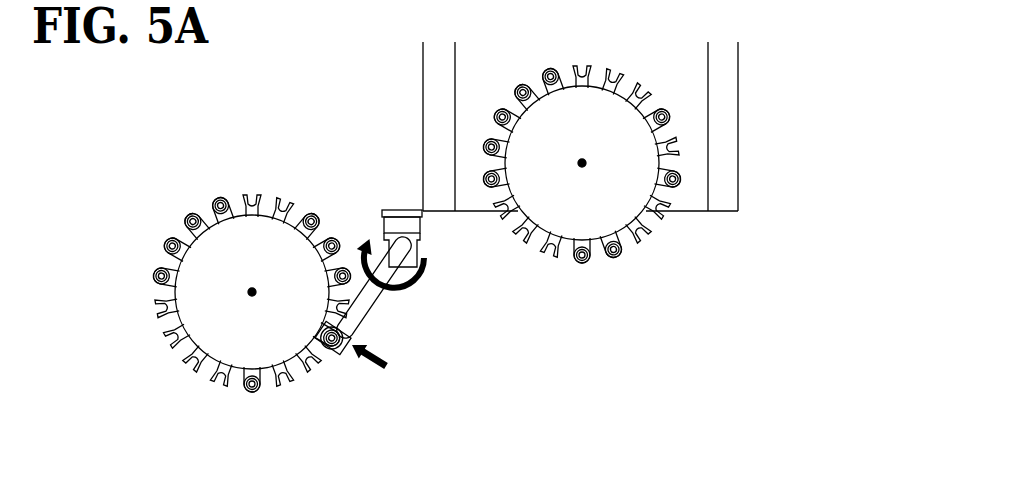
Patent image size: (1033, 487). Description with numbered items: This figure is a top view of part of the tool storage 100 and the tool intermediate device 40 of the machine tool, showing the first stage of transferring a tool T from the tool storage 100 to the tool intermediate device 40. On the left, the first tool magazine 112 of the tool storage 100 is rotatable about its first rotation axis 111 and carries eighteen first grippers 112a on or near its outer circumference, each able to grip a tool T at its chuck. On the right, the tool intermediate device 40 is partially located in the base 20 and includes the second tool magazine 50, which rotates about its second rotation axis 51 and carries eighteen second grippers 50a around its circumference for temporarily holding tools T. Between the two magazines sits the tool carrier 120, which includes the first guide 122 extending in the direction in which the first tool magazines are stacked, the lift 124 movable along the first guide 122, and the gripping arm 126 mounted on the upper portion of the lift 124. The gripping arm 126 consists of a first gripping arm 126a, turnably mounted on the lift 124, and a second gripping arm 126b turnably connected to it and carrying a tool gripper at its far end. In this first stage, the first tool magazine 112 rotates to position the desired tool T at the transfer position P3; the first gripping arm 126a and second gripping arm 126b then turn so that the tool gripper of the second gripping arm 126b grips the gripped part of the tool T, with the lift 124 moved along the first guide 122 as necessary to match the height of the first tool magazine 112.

The base 20 is at (727, 92).
The tool intermediate device 40 is at (660, 258).
The second tool magazine 50 is at (633, 203).
The second gripper 50a is at (528, 233).
The second rotation axis 51 is at (582, 163).
The tool storage 100 is at (175, 196).
The first rotation axis 111 is at (252, 292).
The first tool magazine 112 is at (237, 222).
The first gripper 112a is at (178, 338).
The tool carrier 120 is at (414, 271).
The first guide 122 is at (395, 212).
The lift 124 is at (422, 260).
The gripping arm 126 is at (392, 349).
The first gripping arm 126a is at (373, 310).
The second gripping arm 126b is at (435, 432).
The transfer position P3 is at (308, 331).
The tool T is at (320, 380).